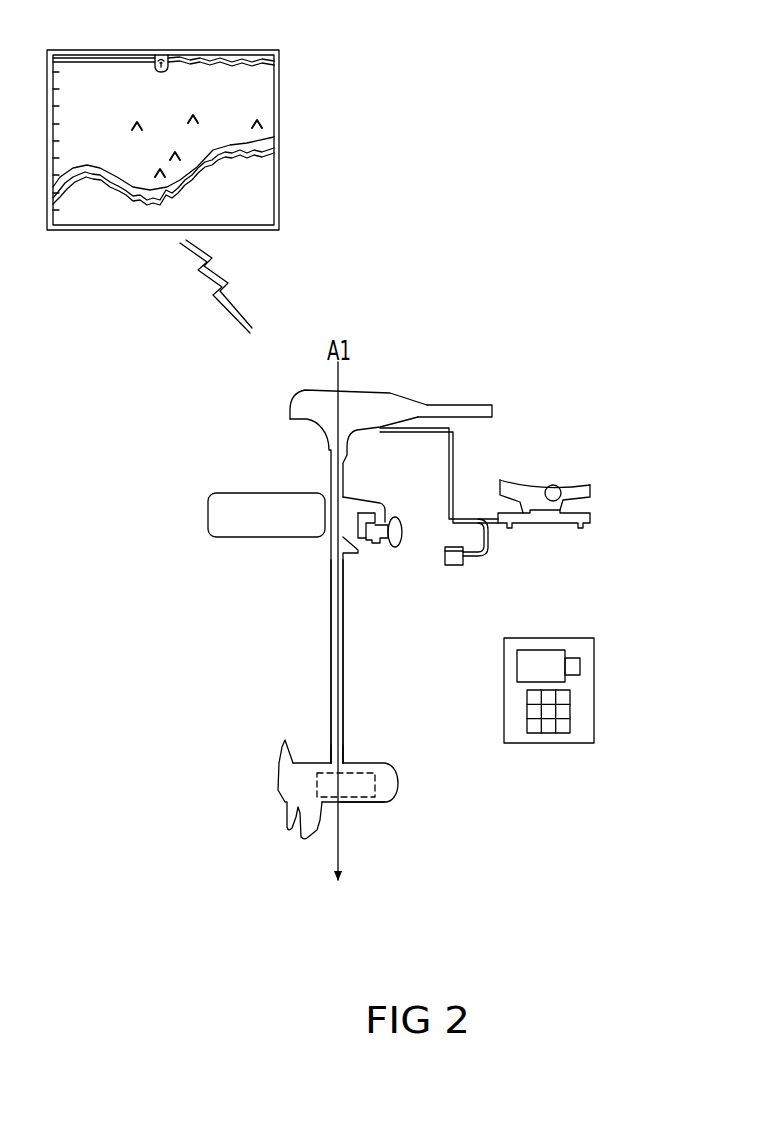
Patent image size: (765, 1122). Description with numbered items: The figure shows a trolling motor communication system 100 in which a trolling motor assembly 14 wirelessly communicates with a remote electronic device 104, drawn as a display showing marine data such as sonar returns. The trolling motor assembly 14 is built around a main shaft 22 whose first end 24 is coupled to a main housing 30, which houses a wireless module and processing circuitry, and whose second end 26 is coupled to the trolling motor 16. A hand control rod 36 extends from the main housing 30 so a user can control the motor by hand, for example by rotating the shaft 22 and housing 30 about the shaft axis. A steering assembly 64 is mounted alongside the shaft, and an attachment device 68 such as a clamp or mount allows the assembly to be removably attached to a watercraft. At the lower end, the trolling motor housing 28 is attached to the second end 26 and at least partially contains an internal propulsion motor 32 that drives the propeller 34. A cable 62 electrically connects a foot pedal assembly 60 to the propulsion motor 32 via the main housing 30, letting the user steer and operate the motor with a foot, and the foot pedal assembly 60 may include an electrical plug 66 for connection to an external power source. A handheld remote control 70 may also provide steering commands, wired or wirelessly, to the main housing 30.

The trolling motor communication system 100 is at (563, 134).
The remote electronic device 104 is at (280, 93).
The trolling motor assembly 14 is at (547, 348).
The main housing 30 is at (318, 386).
The first end 24 is at (319, 456).
The hand control rod 36 is at (490, 425).
The cable 62 is at (444, 463).
The steering assembly 64 is at (229, 541).
The attachment device 68 is at (378, 560).
The electrical plug 66 is at (458, 569).
The foot pedal assembly 60 is at (570, 534).
The main shaft 22 is at (320, 606).
The handheld remote control 70 is at (568, 749).
The propeller 34 is at (275, 756).
The second end 26 is at (358, 752).
The propulsion motor 32 is at (375, 782).
The trolling motor housing 28 is at (398, 803).
The trolling motor 16 is at (366, 819).